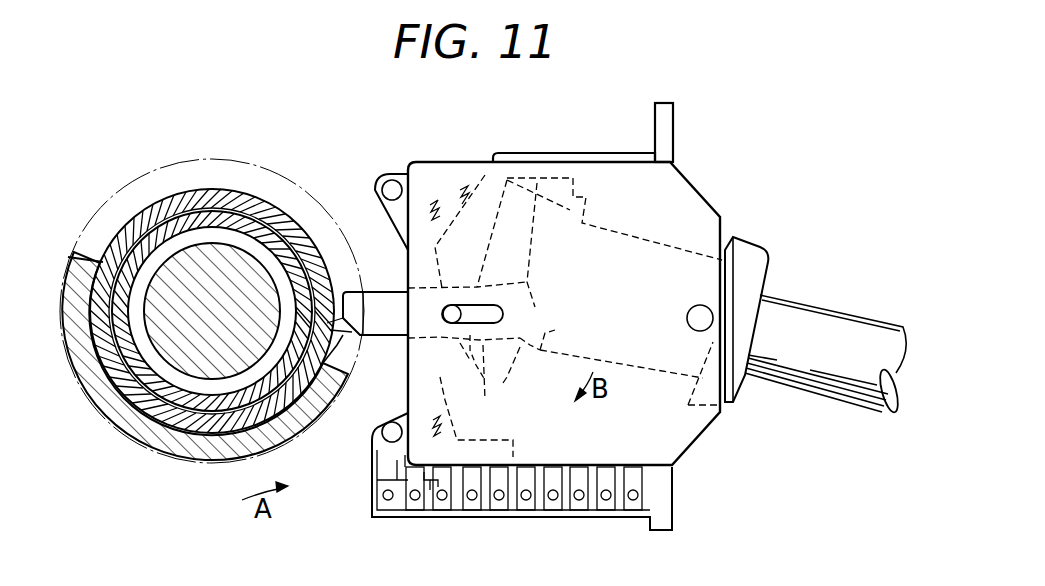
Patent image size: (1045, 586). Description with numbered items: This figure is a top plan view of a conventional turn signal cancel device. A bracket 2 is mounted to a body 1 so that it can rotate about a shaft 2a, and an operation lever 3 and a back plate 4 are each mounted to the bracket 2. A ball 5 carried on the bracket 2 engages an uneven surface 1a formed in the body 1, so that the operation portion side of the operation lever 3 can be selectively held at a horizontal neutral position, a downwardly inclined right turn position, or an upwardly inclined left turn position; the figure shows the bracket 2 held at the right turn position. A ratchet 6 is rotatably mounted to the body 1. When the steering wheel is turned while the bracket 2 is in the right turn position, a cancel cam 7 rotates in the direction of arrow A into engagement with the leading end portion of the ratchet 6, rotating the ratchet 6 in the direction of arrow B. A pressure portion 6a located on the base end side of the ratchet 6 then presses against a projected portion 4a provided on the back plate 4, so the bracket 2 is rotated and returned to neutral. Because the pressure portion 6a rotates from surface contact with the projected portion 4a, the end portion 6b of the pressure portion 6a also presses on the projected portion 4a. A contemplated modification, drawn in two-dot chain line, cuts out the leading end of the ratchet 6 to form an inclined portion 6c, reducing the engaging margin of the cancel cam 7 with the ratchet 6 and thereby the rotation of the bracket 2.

The body 1 is at (582, 150).
The uneven surface 1a is at (408, 364).
The bracket 2 is at (640, 236).
The shaft 2a is at (687, 315).
The operation lever 3 is at (813, 315).
The back plate 4 is at (532, 178).
The projected portion 4a is at (476, 400).
The ball 5 is at (455, 175).
The ratchet 6 is at (383, 302).
The pressure portion 6a is at (503, 383).
The end portion 6b is at (560, 332).
The inclined portion 6c is at (352, 360).
The cancel cam 7 is at (343, 383).